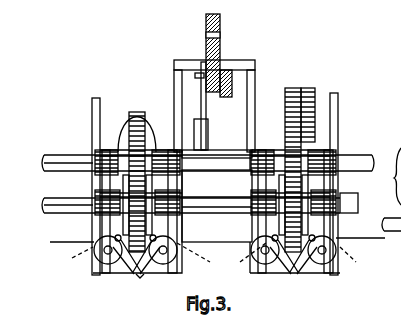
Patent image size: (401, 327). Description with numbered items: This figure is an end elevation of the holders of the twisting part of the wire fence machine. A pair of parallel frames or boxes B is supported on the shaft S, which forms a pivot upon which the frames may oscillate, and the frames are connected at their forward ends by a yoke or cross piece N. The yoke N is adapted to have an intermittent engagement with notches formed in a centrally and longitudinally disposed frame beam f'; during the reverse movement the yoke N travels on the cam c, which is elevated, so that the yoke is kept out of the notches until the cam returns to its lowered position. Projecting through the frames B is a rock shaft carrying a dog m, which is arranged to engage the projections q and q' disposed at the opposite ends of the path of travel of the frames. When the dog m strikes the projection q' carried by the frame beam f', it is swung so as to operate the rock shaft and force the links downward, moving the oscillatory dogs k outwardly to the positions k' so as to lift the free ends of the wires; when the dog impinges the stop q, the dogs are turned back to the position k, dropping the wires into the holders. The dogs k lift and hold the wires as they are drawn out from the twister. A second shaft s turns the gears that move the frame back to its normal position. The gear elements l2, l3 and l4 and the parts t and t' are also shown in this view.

The yoke N is at (236, 61).
The frame beam f' is at (219, 53).
The cam c is at (231, 85).
The projection q' is at (195, 85).
The projection q is at (213, 106).
The dog m is at (208, 134).
The shaft S is at (215, 162).
The shaft s is at (190, 203).
The frames B is at (210, 184).
The gear wheel l3 is at (137, 128).
The gear l2 is at (113, 158).
The gear l4 is at (362, 192).
The dogs k is at (203, 262).
The dog positions k' is at (217, 255).
The roller t is at (234, 262).
The pivot t' is at (149, 282).